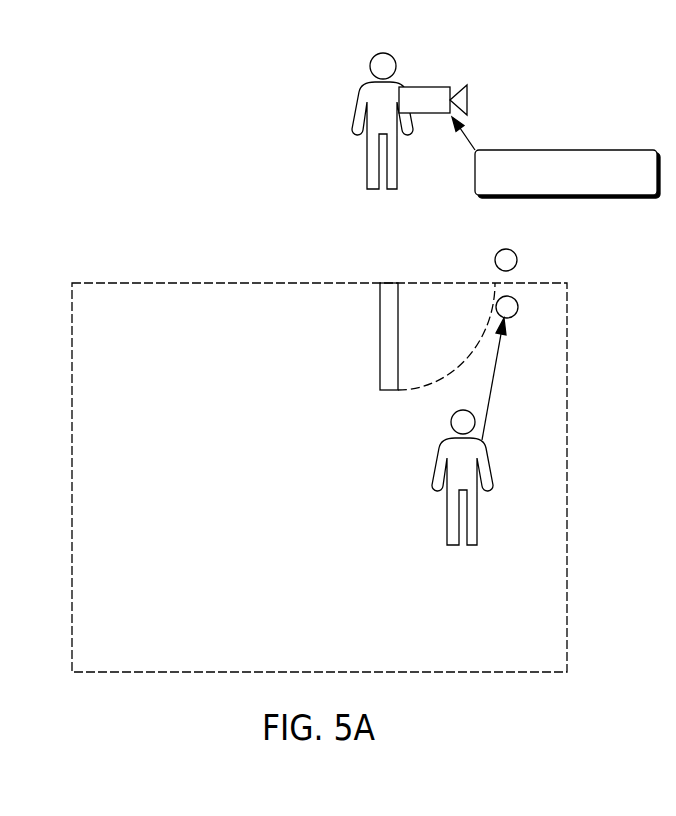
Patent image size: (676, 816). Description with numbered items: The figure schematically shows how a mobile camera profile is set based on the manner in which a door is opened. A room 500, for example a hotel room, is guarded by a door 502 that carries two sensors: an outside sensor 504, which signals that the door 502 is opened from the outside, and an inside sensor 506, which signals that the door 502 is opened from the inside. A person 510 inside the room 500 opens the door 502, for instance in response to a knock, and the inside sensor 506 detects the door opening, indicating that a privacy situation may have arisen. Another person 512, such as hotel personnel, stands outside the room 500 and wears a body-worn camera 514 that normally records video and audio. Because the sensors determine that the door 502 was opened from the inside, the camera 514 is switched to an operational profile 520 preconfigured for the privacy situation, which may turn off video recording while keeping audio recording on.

The room 500 is at (320, 283).
The door 502 is at (380, 340).
The outside sensor 504 is at (517, 260).
The inside sensor 506 is at (518, 307).
The person 510 is at (432, 470).
The person 512 is at (352, 112).
The body-worn camera 514 is at (468, 102).
The operational profile 520 is at (603, 150).